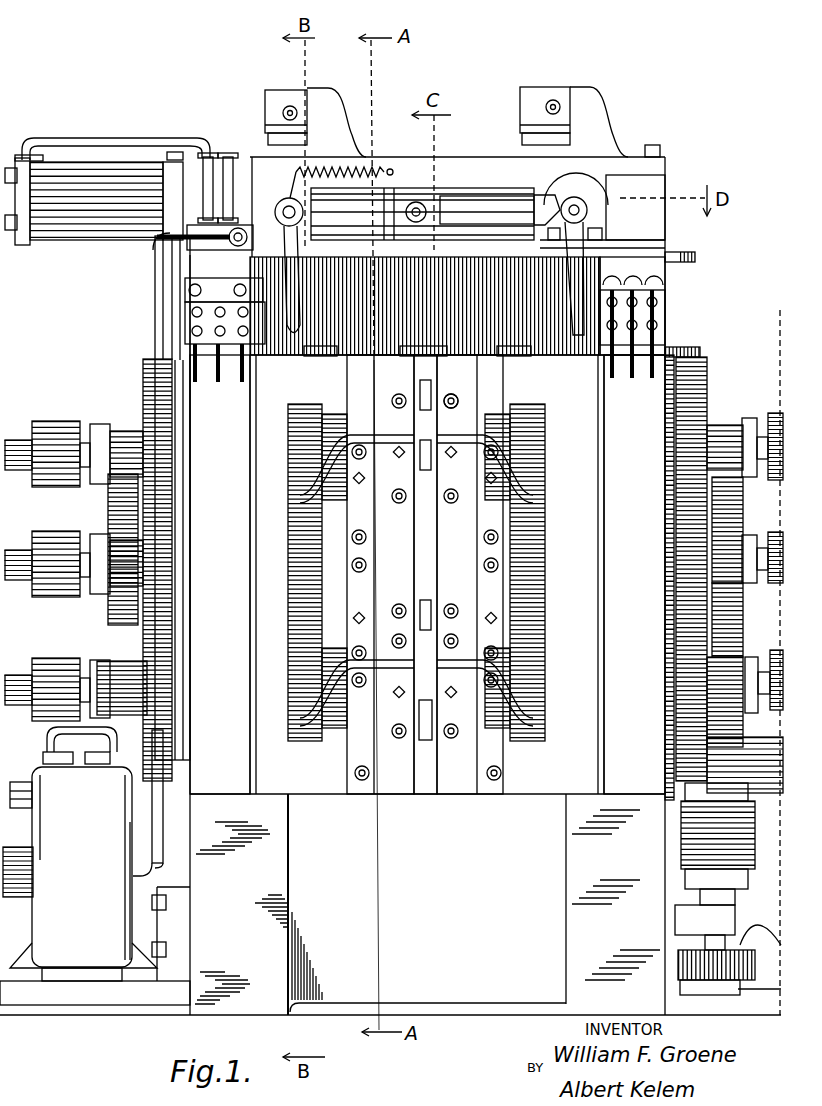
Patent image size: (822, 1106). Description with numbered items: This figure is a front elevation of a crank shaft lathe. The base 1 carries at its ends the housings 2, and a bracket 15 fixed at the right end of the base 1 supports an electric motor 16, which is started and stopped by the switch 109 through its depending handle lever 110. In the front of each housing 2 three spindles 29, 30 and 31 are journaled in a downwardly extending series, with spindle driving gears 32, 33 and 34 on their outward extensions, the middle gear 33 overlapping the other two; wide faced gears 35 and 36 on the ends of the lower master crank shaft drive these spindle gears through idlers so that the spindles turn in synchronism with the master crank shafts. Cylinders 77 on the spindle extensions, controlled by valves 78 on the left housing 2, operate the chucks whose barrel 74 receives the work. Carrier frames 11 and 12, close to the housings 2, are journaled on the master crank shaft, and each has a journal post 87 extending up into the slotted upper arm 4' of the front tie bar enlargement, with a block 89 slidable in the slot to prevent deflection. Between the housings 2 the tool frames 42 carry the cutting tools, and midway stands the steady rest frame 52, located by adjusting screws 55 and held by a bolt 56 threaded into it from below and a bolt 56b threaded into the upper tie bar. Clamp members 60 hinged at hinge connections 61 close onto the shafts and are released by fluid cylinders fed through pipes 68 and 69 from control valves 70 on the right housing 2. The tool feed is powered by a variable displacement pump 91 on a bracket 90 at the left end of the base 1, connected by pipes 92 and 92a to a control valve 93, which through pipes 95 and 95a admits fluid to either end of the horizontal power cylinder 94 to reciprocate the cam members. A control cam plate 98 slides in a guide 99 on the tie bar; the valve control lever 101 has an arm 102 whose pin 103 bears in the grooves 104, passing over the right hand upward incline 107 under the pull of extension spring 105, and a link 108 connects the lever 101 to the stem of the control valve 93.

The base 1 is at (487, 985).
The housings 2 is at (427, 574).
The upper guideway forming arm 4' is at (467, 109).
The carrier frame 11 is at (551, 381).
The carrier frame 12 is at (273, 392).
The bracket 15 is at (748, 990).
The electric motor 16 is at (766, 885).
The spindle 29 is at (187, 459).
The spindle 30 is at (190, 563).
The spindle 31 is at (188, 667).
The spindle driving gear 32 is at (150, 398).
The spindle driving gear 33 is at (112, 622).
The spindle driving gear 34 is at (147, 771).
The wide faced gear 35 is at (745, 722).
The wide faced gear 36 is at (127, 768).
The tool frame 42 is at (365, 796).
The steady rest frame 52 is at (425, 796).
The adjusting screws 55 is at (412, 362).
The bolt 56 is at (440, 362).
The bolt 56b is at (451, 401).
The clamp member 60 is at (416, 572).
The hinge connections 61 is at (431, 732).
The pipe 68 is at (698, 264).
The pipe 69 is at (702, 352).
The control valves 70 is at (668, 310).
The barrel 74 is at (290, 540).
The cylinders 77 is at (45, 422).
The valves 78 is at (240, 388).
The journal post 87 is at (283, 113).
The block 89 is at (290, 105).
The bracket 90 is at (87, 1005).
The variable displacement pump 91 is at (65, 913).
The pipe 92 is at (158, 317).
The pipe 92a is at (180, 336).
The control valve 93 is at (152, 272).
The power cylinder 94 is at (75, 205).
The pipe 95 is at (215, 150).
The pipe 95a is at (140, 125).
The control cam plate 98 is at (450, 210).
The guide 99 is at (355, 196).
The valve control lever 101 is at (320, 238).
The arm 102 is at (378, 215).
The pin 103 is at (416, 201).
The grooves 104 is at (498, 202).
The extension spring 105 is at (325, 168).
The right hand upward incline 107 is at (576, 198).
The link 108 is at (264, 230).
The switch 109 is at (602, 218).
The handle lever 110 is at (575, 317).